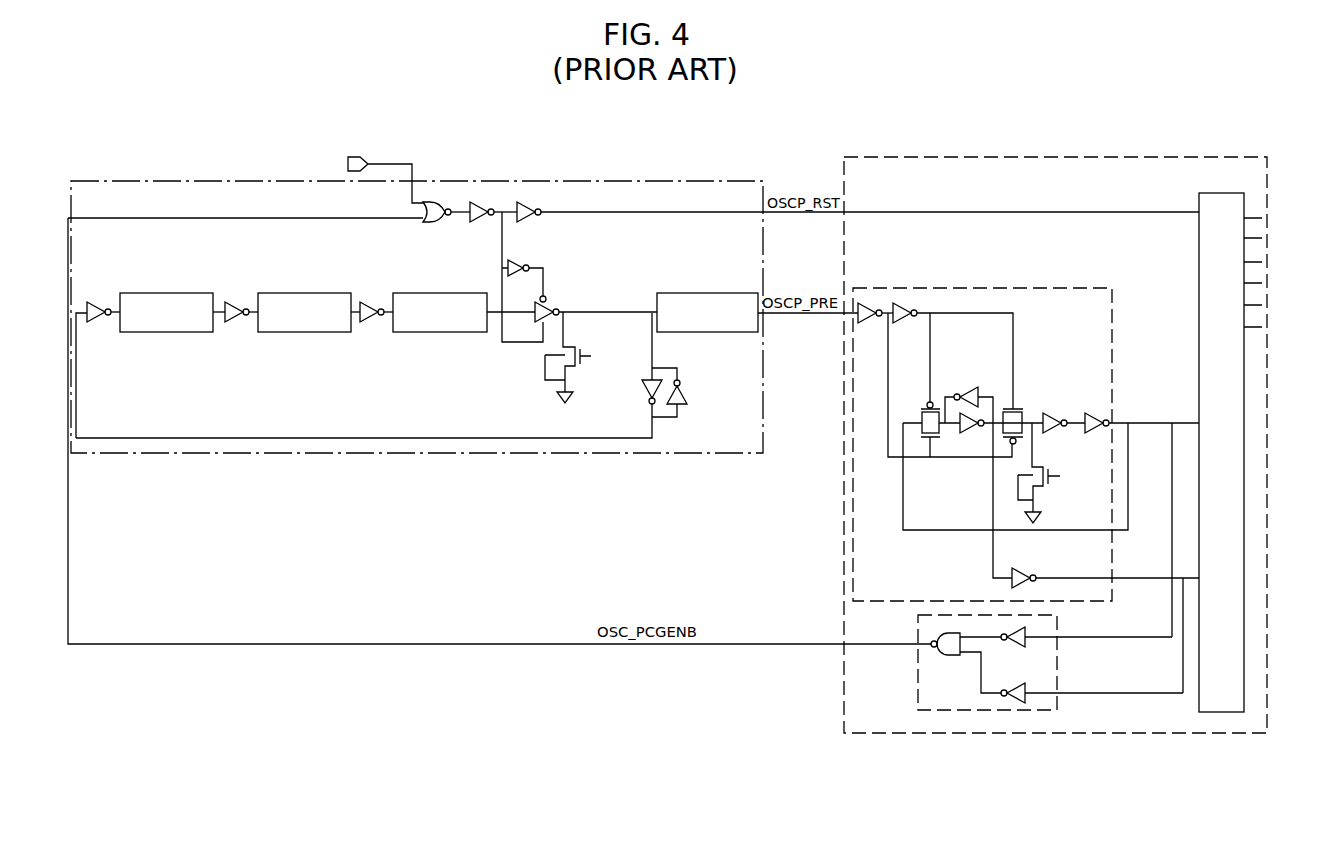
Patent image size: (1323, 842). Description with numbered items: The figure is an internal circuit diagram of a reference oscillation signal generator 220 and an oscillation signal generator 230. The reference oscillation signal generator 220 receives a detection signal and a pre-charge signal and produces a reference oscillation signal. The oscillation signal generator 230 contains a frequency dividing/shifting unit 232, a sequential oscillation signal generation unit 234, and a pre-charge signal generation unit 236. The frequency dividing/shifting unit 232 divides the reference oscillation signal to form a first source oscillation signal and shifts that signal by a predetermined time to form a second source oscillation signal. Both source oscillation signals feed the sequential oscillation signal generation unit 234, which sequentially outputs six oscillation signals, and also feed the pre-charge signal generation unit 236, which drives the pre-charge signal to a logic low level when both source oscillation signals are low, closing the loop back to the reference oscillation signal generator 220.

The reference oscillation signal generator 220 is at (690, 182).
The oscillation signal generator 230 is at (1240, 157).
The frequency dividing/shifting unit 232 is at (1032, 288).
The sequential oscillation signal generation unit 234 is at (1218, 193).
The pre-charge signal generation unit 236 is at (1058, 620).